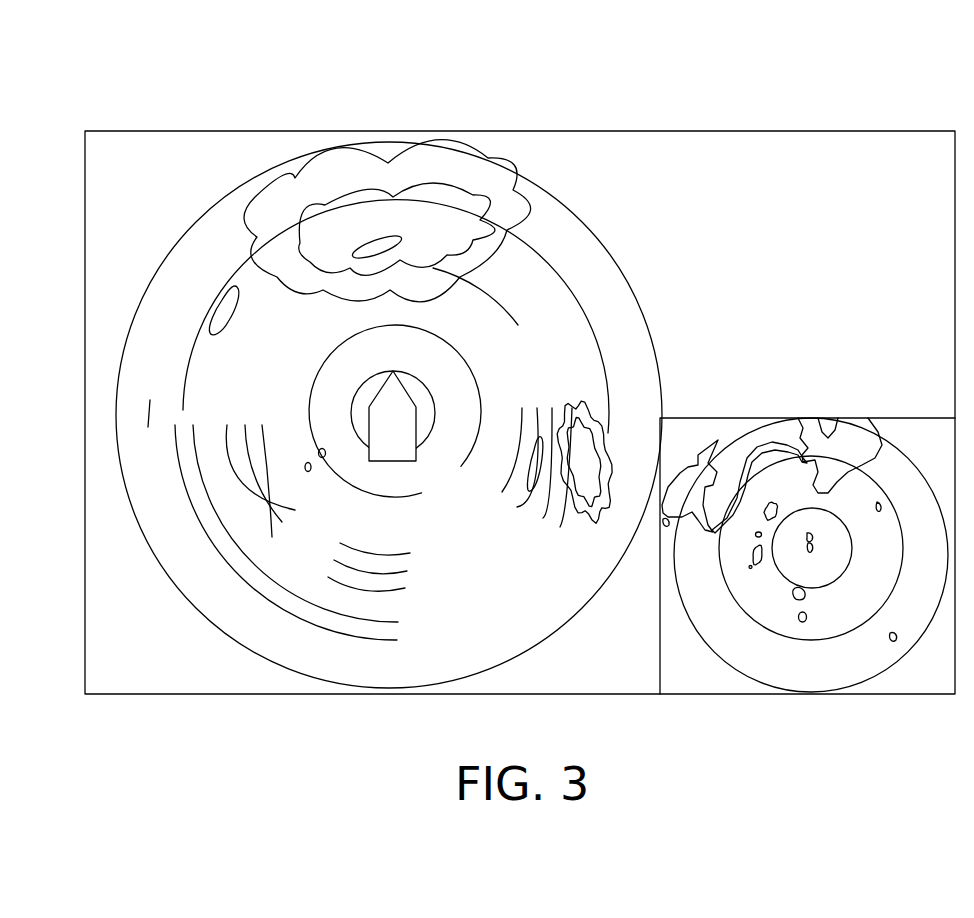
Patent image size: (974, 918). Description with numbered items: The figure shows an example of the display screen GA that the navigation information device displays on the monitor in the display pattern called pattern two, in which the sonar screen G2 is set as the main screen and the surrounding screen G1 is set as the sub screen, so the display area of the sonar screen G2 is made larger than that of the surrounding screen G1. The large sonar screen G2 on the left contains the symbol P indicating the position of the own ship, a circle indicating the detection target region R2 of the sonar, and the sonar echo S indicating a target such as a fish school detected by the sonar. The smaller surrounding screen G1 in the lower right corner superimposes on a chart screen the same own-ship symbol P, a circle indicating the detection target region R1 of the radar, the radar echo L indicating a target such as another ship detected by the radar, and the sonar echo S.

The display screen GA is at (577, 80).
The sonar screen G2 is at (485, 381).
The surrounding screen G1 is at (807, 528).
The detection target region of the sonar R2 is at (633, 293).
The detection target region of the radar R1 is at (917, 455).
The sonar echo S is at (342, 150).
The symbol indicating the position of the own ship P is at (416, 454).
The radar echo L is at (880, 508).